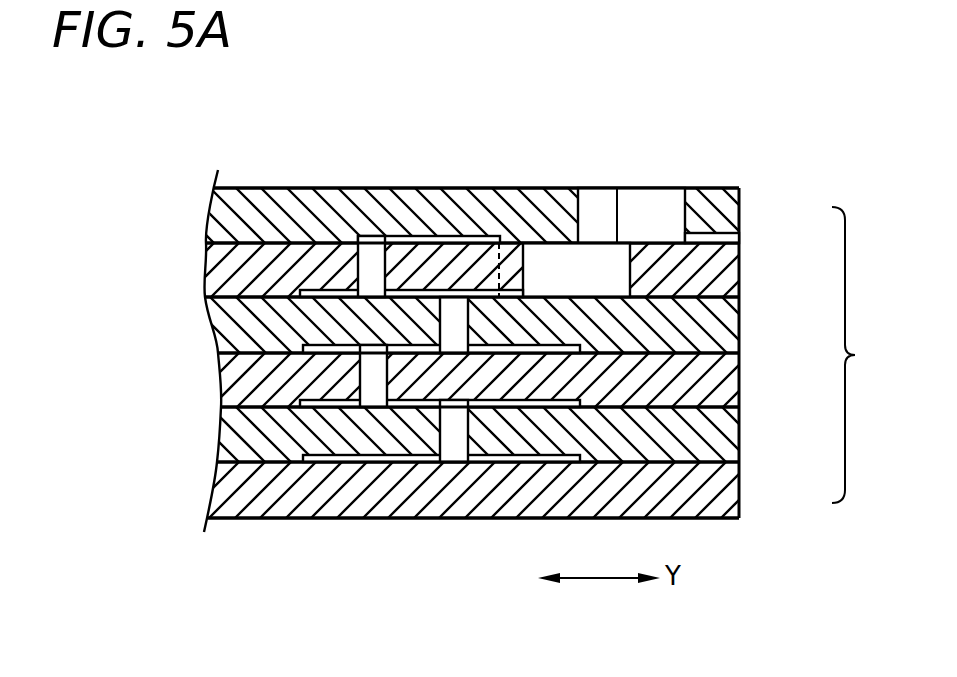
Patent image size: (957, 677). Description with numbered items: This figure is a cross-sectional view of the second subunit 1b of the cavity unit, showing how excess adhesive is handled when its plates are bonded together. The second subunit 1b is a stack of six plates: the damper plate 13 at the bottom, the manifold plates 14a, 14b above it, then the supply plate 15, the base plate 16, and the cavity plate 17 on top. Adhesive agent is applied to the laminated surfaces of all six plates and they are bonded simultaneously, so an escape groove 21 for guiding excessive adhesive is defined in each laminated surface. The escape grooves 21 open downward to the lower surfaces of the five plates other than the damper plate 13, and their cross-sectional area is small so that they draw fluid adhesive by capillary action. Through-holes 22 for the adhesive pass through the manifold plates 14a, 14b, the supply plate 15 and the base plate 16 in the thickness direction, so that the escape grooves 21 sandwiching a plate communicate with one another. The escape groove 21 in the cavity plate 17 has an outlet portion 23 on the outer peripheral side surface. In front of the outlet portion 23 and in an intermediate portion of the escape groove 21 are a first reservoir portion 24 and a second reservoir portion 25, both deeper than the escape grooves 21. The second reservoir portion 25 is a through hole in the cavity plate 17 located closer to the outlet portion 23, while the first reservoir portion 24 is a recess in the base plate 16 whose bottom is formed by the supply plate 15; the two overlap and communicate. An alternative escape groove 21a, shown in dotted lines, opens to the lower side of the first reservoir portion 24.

The second subunit 1b is at (864, 355).
The damper plate 13 is at (722, 490).
The manifold plate 14a is at (722, 440).
The manifold plate 14b is at (718, 378).
The supply plate 15 is at (718, 322).
The base plate 16 is at (724, 268).
The cavity plate 17 is at (728, 202).
The escape groove 21 is at (447, 322).
The escape groove 21a is at (497, 243).
The through-hole 22 is at (376, 236).
The outlet portion 23 is at (710, 233).
The first reservoir portion 24 is at (630, 272).
The second reservoir portion 25 is at (579, 205).